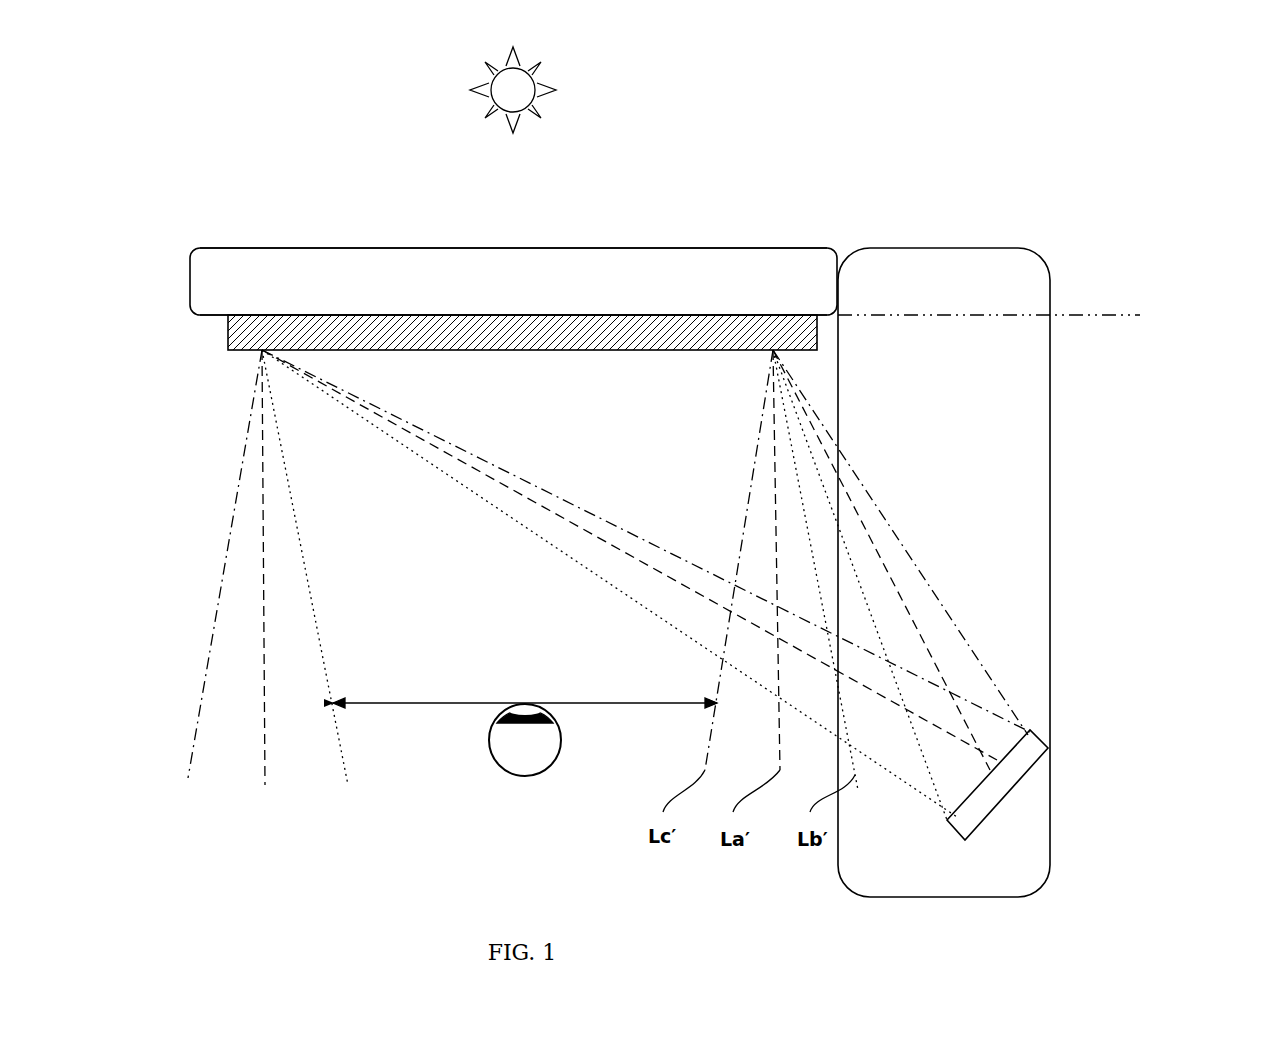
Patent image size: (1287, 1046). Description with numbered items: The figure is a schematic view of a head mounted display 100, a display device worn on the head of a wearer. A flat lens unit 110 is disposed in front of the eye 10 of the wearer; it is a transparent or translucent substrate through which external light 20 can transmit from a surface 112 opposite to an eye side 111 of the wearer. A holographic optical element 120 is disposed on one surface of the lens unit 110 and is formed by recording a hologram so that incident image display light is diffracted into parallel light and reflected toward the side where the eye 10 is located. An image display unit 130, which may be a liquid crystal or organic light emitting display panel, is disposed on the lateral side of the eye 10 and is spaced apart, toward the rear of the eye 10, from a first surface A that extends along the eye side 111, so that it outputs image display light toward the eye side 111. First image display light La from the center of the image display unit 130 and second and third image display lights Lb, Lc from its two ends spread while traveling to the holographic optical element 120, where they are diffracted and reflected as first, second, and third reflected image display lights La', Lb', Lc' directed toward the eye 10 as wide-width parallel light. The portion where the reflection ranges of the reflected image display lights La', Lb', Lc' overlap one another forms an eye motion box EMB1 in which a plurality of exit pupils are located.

The head mounted display 100 is at (146, 134).
The external light 20 is at (545, 92).
The lens unit 110 is at (189, 283).
The surface 112 is at (196, 248).
The eye side 111 is at (193, 316).
The holographic optical element 120 is at (546, 352).
The image display unit 130 is at (1050, 737).
The eye 10 is at (510, 770).
The first surface A is at (1001, 316).
The eye motion box EMB1 is at (525, 691).
The first image display light La is at (662, 578).
The second image display light Lb is at (609, 603).
The third image display light Lc is at (646, 542).
The first reflected image display light La' is at (235, 596).
The second reflected image display light Lb' is at (305, 596).
The third reflected image display light Lc' is at (196, 597).